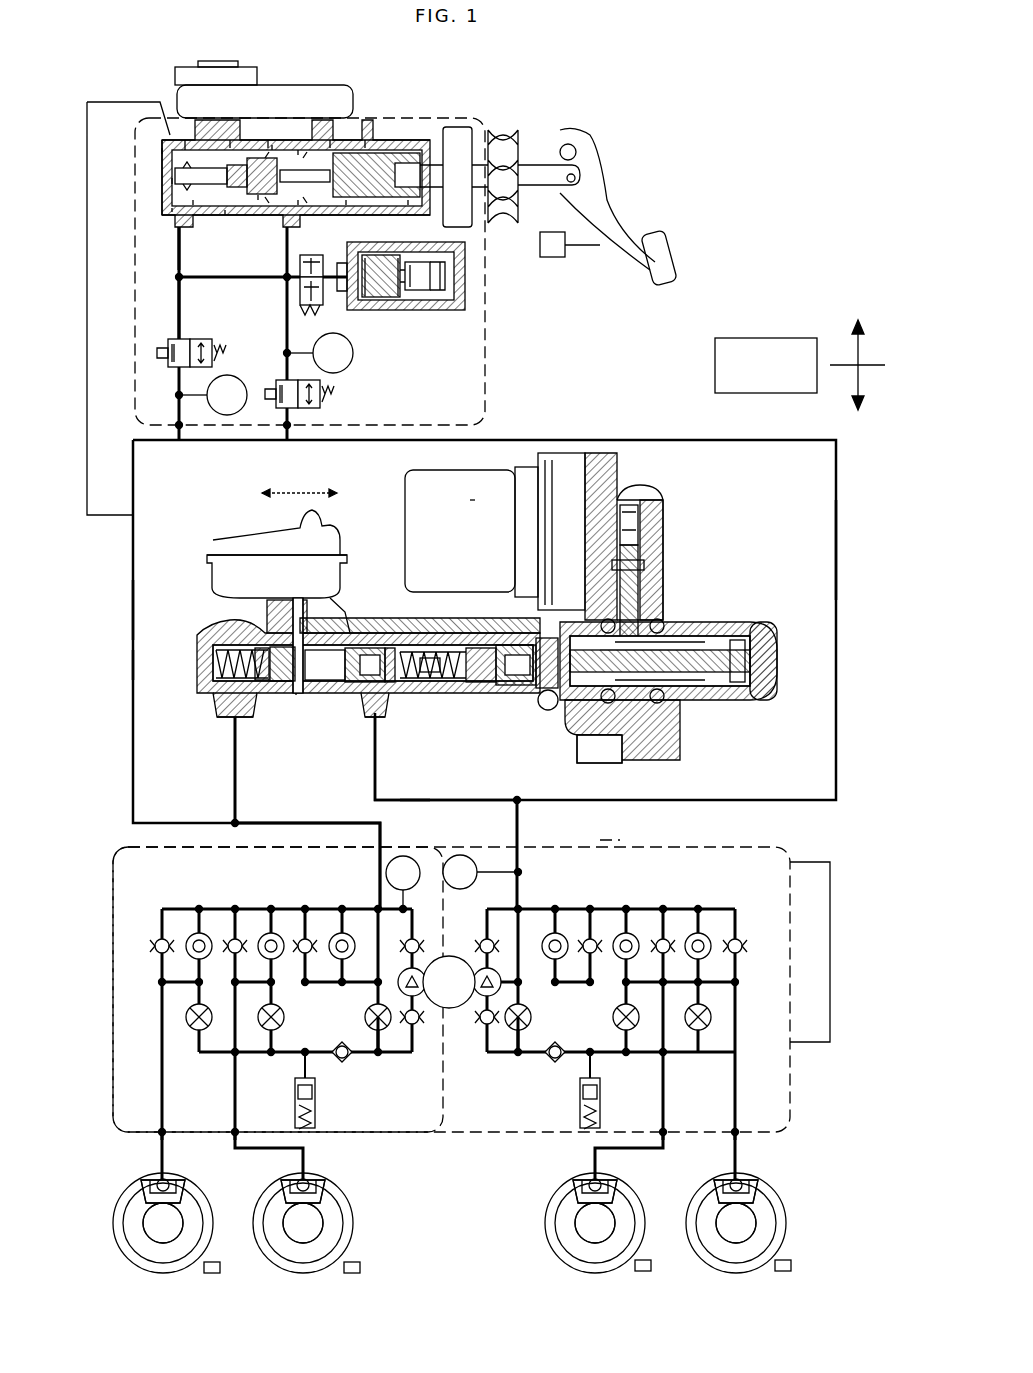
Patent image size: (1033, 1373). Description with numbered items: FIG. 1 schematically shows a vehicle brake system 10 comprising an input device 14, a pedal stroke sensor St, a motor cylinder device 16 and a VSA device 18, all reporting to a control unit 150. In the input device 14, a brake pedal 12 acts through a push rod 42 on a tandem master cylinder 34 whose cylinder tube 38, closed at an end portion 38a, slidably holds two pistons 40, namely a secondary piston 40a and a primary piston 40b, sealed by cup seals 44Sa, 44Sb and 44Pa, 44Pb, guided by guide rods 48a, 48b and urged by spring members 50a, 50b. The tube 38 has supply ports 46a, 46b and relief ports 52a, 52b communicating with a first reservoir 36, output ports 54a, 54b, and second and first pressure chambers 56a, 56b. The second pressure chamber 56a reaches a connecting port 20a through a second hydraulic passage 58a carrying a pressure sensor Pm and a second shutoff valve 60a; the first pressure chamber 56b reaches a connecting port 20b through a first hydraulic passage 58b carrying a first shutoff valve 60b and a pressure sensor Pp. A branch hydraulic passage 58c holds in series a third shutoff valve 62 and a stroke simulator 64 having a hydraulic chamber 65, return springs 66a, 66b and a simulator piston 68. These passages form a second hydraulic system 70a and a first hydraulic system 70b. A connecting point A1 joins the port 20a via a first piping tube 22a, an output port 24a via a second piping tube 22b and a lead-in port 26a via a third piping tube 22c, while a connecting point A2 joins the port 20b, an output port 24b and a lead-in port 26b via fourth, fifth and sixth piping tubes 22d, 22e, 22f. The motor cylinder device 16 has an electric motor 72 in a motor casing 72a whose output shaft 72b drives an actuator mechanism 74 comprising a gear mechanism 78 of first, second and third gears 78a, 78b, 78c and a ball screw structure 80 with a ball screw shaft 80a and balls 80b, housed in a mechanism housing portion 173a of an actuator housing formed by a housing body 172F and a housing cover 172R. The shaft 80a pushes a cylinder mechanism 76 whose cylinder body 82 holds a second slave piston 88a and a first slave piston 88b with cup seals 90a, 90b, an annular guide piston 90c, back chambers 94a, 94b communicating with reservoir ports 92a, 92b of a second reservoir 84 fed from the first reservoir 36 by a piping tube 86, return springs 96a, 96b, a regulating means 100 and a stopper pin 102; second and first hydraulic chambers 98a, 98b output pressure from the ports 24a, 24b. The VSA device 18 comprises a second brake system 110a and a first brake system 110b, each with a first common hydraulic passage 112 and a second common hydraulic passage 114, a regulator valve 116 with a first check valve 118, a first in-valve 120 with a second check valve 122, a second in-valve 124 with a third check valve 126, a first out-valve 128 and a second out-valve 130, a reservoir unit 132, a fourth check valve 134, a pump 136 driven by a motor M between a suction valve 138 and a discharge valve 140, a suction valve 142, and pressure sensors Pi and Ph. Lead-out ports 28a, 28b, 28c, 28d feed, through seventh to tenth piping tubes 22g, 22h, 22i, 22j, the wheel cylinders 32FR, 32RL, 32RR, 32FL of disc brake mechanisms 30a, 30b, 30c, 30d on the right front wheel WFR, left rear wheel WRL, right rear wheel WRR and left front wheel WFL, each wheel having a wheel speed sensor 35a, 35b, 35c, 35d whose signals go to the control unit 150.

The brake system 10 is at (612, 100).
The brake pedal 12 is at (675, 250).
The input device 14 is at (492, 343).
The motor cylinder device 16 is at (690, 440).
The vehicle movement stability device (VSA device) 18 is at (712, 840).
The connecting port 20a is at (285, 430).
The connecting port 20b is at (182, 430).
The first piping tube 22a is at (837, 528).
The second piping tube 22b is at (420, 800).
The third piping tube 22c is at (520, 822).
The fourth piping tube 22d is at (133, 612).
The fifth piping tube 22e is at (234, 775).
The sixth piping tube 22f is at (302, 823).
The seventh piping tube 22g is at (740, 1170).
The eighth piping tube 22h is at (594, 1165).
The ninth piping tube 22i is at (306, 1160).
The tenth piping tube 22j is at (160, 1178).
The output port 24a is at (378, 720).
The output port 24b is at (215, 708).
The lead-in port 26a is at (612, 838).
The lead-in port 26b is at (415, 803).
The first lead-out port 28a is at (740, 1136).
The second lead-out port 28b is at (664, 1135).
The third lead-out port 28c is at (234, 1136).
The fourth lead-out port 28d is at (160, 1135).
The disc brake mechanism 30a is at (778, 1222).
The disc brake mechanism 30b is at (637, 1222).
The disc brake mechanism 30c is at (345, 1222).
The disc brake mechanism 30d is at (205, 1222).
The wheel cylinder 32FL is at (185, 1186).
The wheel cylinder 32FR is at (758, 1195).
The wheel cylinder 32RL is at (617, 1186).
The wheel cylinder 32RR is at (325, 1195).
The master cylinder 34 is at (412, 140).
The wheel speed sensor 35a is at (792, 1265).
The wheel speed sensor 35b is at (652, 1268).
The wheel speed sensor 35c is at (361, 1270).
The wheel speed sensor 35d is at (221, 1270).
The first reservoir 36 is at (348, 88).
The cylinder tube 38 is at (405, 160).
The end portion 38a is at (160, 150).
The pistons 40 is at (252, 177).
The secondary piston 40a is at (410, 205).
The primary piston 40b is at (258, 200).
The push rod 42 is at (452, 160).
The cup seal 44Pa is at (196, 205).
The cup seal 44Pb is at (225, 215).
The cup seal 44Sa is at (300, 205).
The cup seal 44Sb is at (348, 205).
The second supply port 46a is at (365, 138).
The first supply port 46b is at (235, 125).
The guide rod 48a is at (298, 140).
The guide rod 48b is at (172, 182).
The spring member 50a is at (272, 135).
The spring member 50b is at (172, 210).
The second relief port 52a is at (330, 125).
The first relief port 52b is at (205, 118).
The output port 54a is at (285, 282).
The output port 54b is at (182, 232).
The second pressure chamber 56a is at (268, 130).
The first pressure chamber 56b is at (185, 140).
The second hydraulic passage 58a is at (285, 345).
The first hydraulic passage 58b is at (178, 305).
The branch hydraulic passage 58c is at (232, 290).
The second shutoff valve 60a is at (322, 402).
The first shutoff valve 60b is at (195, 338).
The third shutoff valve 62 is at (325, 295).
The stroke simulator 64 is at (470, 255).
The hydraulic chamber 65 is at (366, 300).
The first return spring 66a is at (445, 300).
The second return spring 66b is at (412, 300).
The simulator piston 68 is at (396, 300).
The second hydraulic system 70a is at (590, 435).
The first hydraulic system 70b is at (120, 662).
The electric motor 72 is at (440, 470).
The motor casing 72a is at (472, 500).
The output shaft 72b is at (650, 520).
The actuator mechanism 74 is at (767, 581).
The cylinder mechanism 76 is at (192, 684).
The gear mechanism 78 is at (665, 585).
The first gear 78a is at (636, 500).
The second gear 78b is at (650, 548).
The third gear 78c is at (675, 748).
The ball screw structure 80 is at (700, 640).
The ball screw shaft 80a is at (725, 688).
The balls 80b is at (690, 645).
The cylinder body 82 is at (475, 685).
The second reservoir 84 is at (212, 552).
The piping tube 86 is at (87, 346).
The second slave piston 88a is at (512, 690).
The first slave piston 88b is at (355, 690).
The cup seal 90a is at (388, 688).
The cup seal 90b is at (265, 685).
The annular guide piston 90c is at (540, 705).
The reservoir port 92a is at (345, 605).
The reservoir port 92b is at (280, 612).
The second back chamber 94a is at (530, 700).
The first back chamber 94b is at (325, 685).
The second return spring 96a is at (410, 618).
The first return spring 96b is at (228, 645).
The second hydraulic chamber 98a is at (433, 685).
The first hydraulic chamber 98b is at (215, 655).
The regulating means 100 is at (425, 680).
The stopper pin 102 is at (298, 695).
The second brake system 110a is at (735, 900).
The first brake system 110b is at (172, 900).
The first common hydraulic passage 112 is at (240, 908).
The second common hydraulic passage 114 is at (250, 1055).
The regulator valve 116 is at (343, 932).
The first check valve 118 is at (304, 935).
The first in-valve 120 is at (196, 932).
The second check valve 122 is at (158, 935).
The second in-valve 124 is at (269, 932).
The third check valve 126 is at (234, 935).
The first out-valve 128 is at (195, 1032).
The second out-valve 130 is at (286, 1015).
The reservoir unit 132 is at (316, 1112).
The fourth check valve 134 is at (345, 1063).
The pump 136 is at (475, 995).
The suction valve 138 is at (478, 1025).
The discharge valve 140 is at (480, 940).
The suction valve 142 is at (380, 1054).
The control unit 150 is at (762, 338).
The housing body 172F is at (620, 765).
The housing cover 172R is at (768, 690).
The mechanism housing portion 173a is at (600, 763).
The connecting point A1 is at (520, 790).
The connecting point A2 is at (246, 814).
The pedal stroke sensor St is at (552, 258).
The pressure sensor Pp is at (212, 395).
The pressure sensor Pm is at (319, 353).
The pressure sensor Pi is at (403, 884).
The pressure sensor Ph is at (482, 872).
The motor M is at (449, 982).
The left front wheel WFL is at (113, 1222).
The right front wheel WFR is at (790, 1220).
The left rear wheel WRL is at (555, 1182).
The right rear wheel WRR is at (340, 1180).